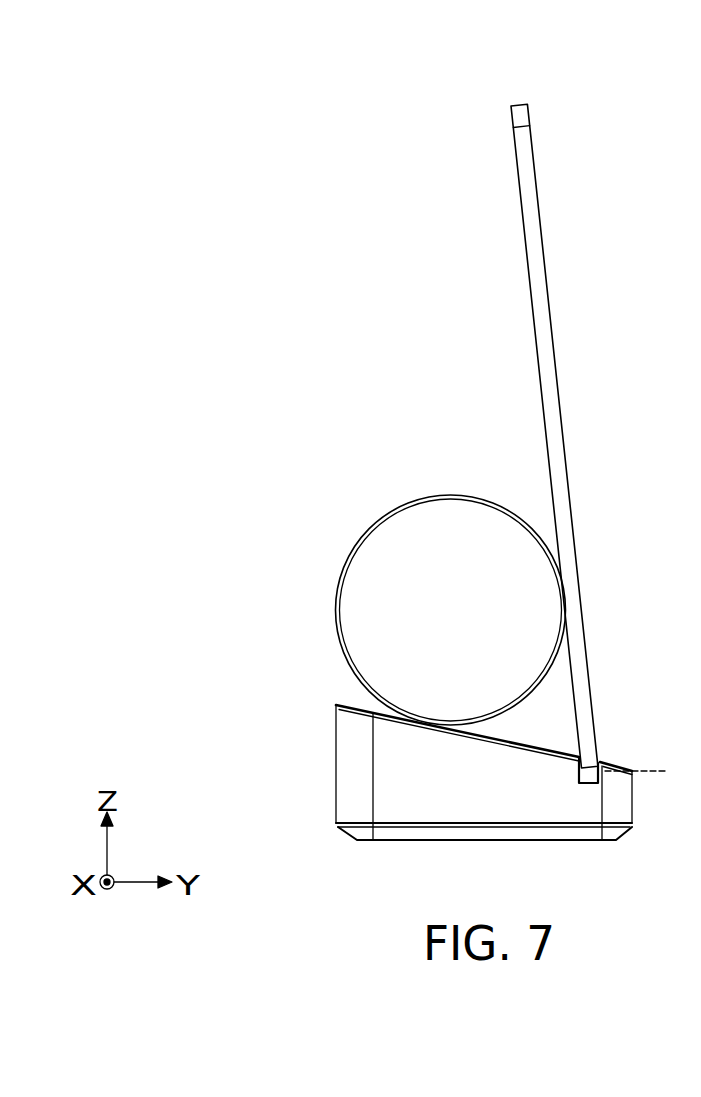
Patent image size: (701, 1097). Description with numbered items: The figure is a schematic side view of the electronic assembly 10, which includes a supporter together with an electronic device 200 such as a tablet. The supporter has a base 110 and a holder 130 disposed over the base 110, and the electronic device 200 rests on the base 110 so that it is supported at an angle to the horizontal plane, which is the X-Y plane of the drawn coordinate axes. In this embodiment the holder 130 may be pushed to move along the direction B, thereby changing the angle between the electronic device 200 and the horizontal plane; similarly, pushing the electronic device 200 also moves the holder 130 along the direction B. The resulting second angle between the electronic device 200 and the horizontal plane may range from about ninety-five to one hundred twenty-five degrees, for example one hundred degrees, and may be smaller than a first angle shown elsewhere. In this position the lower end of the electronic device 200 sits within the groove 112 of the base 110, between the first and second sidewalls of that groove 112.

The electronic assembly 10 is at (215, 73).
The base 110 is at (433, 801).
The groove 112 is at (594, 787).
The holder 130 is at (385, 543).
The electronic device 200 is at (545, 262).
The direction B is at (378, 612).